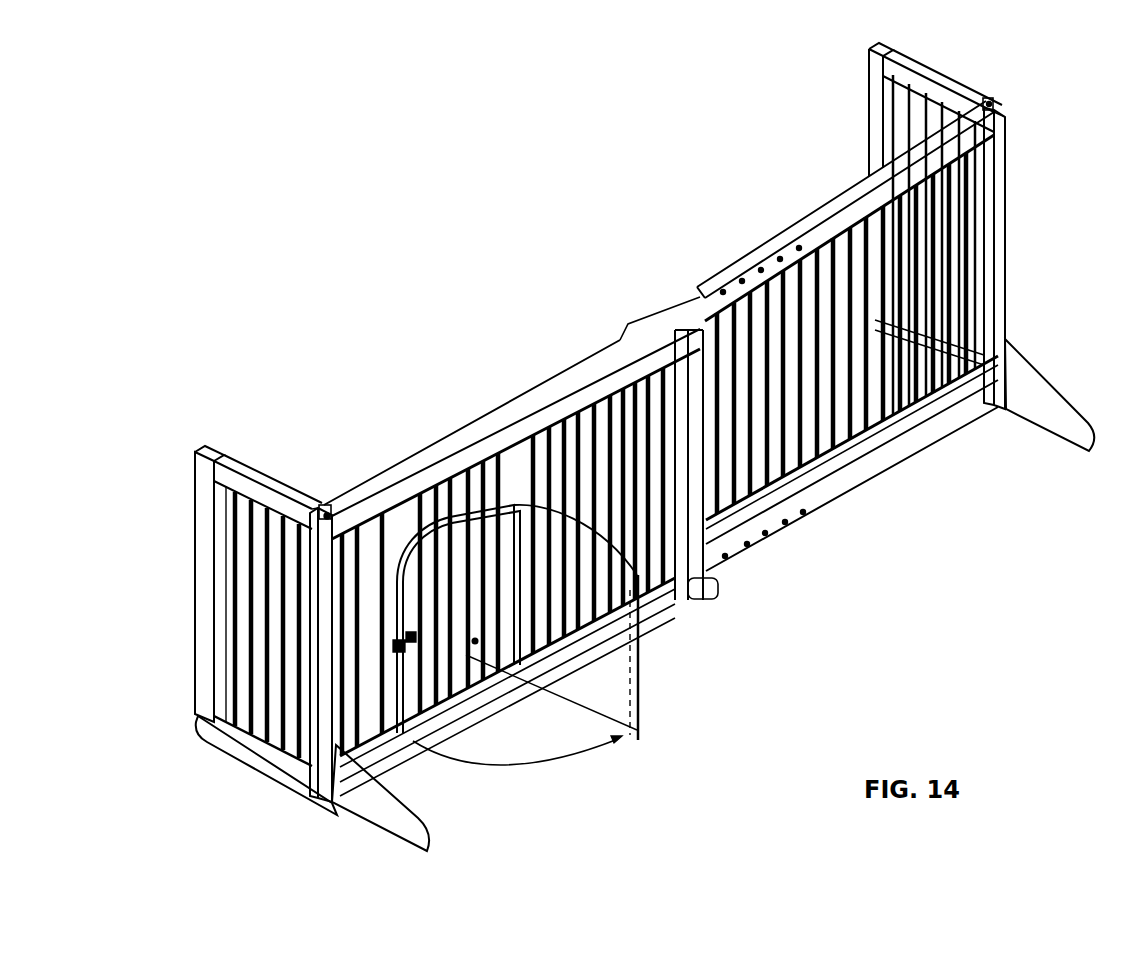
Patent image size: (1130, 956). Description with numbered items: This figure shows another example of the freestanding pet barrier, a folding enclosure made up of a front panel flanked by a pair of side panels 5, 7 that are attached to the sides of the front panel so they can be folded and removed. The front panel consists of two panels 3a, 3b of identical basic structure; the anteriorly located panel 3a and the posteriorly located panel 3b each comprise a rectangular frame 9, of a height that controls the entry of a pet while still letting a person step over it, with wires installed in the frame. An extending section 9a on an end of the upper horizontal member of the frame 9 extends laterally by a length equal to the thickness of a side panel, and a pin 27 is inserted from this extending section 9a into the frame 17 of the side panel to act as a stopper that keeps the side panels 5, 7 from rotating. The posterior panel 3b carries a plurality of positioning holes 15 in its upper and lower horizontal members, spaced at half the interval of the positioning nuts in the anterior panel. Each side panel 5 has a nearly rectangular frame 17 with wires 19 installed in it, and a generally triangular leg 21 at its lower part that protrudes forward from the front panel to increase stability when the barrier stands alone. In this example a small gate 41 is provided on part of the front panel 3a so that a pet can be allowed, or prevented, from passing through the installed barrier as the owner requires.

The panel 3a is at (536, 393).
The panel 3b is at (715, 270).
The side panel 5 is at (205, 624).
The side panel 7 is at (950, 66).
The rectangular frame 9 is at (453, 437).
The extending section 9a is at (308, 512).
The positioning holes 15 is at (741, 281).
The frame 17 is at (195, 672).
The wires 19 is at (237, 558).
The leg 21 is at (380, 829).
The pin 27 is at (324, 510).
The small gate 41 is at (486, 655).